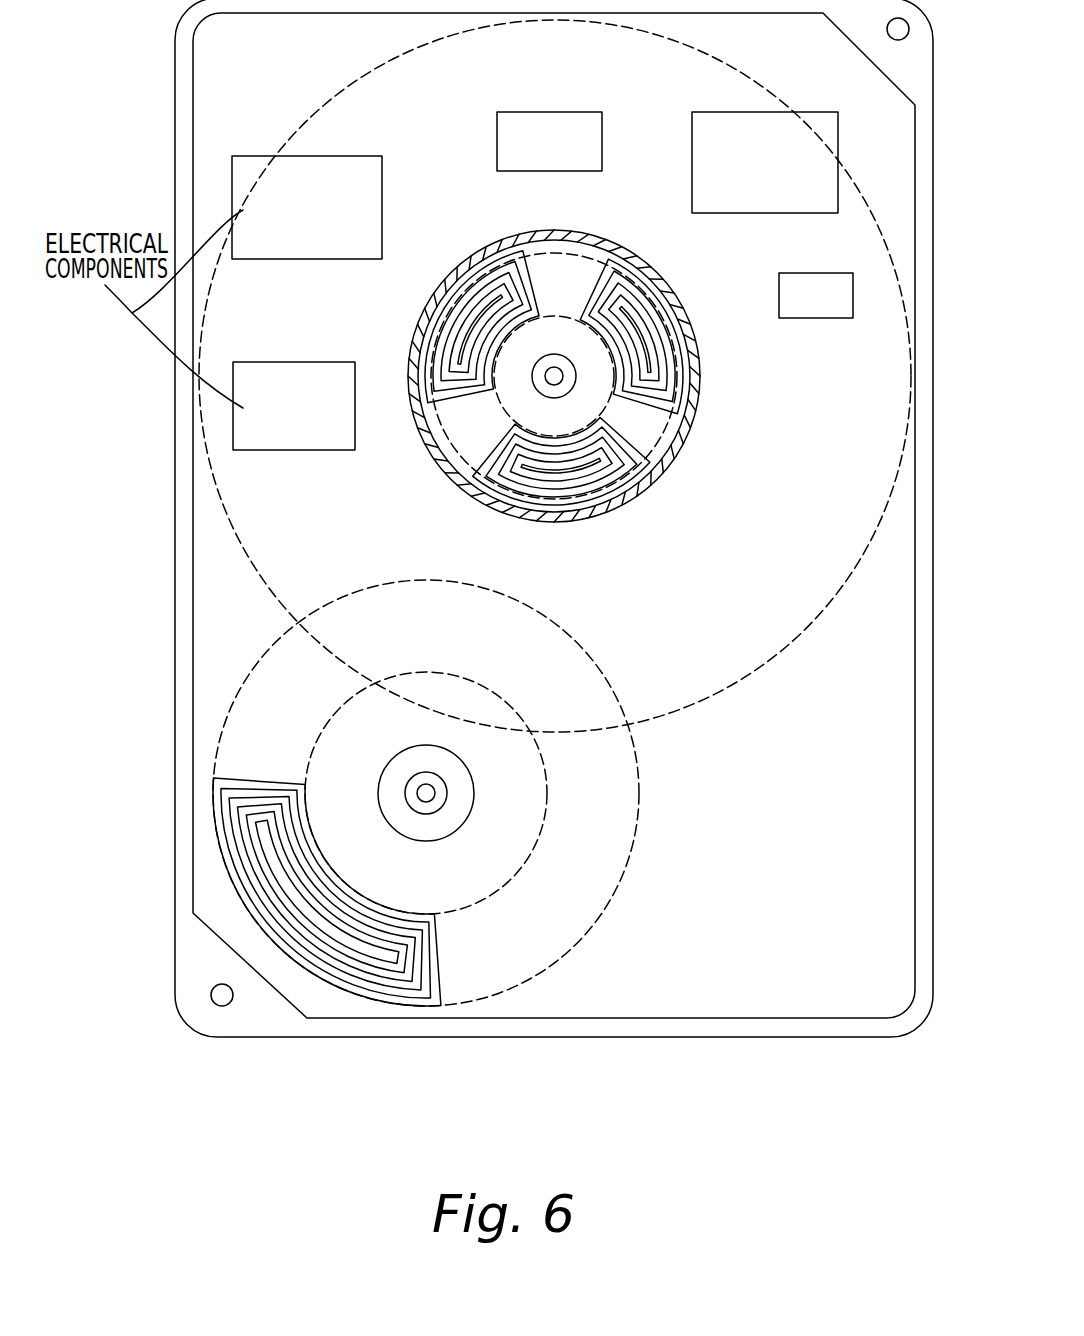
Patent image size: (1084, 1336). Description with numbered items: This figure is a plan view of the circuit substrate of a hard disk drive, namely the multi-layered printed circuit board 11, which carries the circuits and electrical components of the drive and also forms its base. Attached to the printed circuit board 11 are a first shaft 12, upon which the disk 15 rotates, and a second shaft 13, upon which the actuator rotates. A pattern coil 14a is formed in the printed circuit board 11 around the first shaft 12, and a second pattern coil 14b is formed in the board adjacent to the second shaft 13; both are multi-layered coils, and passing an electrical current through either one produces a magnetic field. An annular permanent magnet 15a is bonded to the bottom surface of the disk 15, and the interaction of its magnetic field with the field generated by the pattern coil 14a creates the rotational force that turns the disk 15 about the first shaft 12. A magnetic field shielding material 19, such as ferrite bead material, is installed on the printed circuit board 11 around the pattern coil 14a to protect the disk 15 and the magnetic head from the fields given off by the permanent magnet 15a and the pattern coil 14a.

The printed circuit board 11 is at (687, 977).
The first shaft 12 is at (553, 368).
The second shaft 13 is at (436, 794).
The pattern coil 14a is at (690, 382).
The pattern coil 14b is at (393, 985).
The disk 15 is at (798, 640).
The permanent magnet 15a is at (427, 455).
The magnetic field shielding material 19 is at (637, 490).